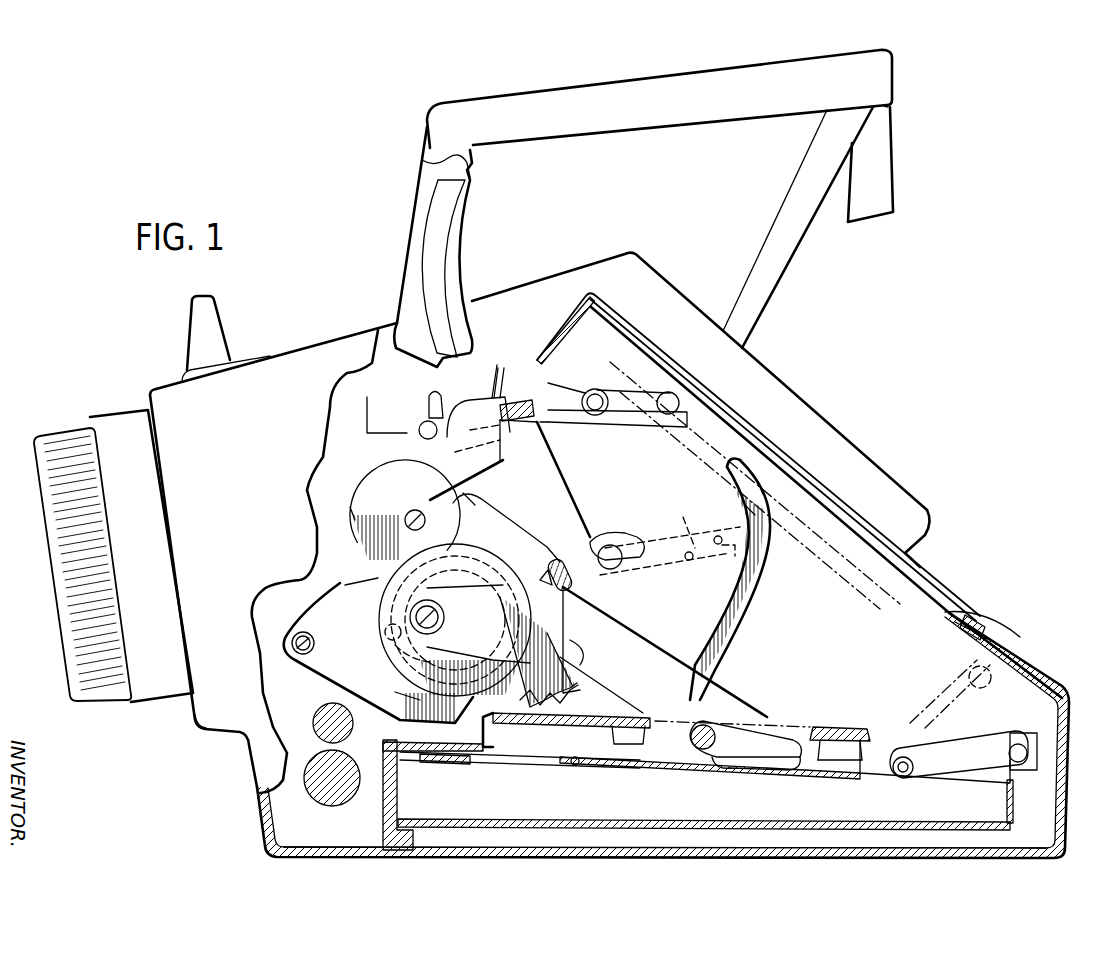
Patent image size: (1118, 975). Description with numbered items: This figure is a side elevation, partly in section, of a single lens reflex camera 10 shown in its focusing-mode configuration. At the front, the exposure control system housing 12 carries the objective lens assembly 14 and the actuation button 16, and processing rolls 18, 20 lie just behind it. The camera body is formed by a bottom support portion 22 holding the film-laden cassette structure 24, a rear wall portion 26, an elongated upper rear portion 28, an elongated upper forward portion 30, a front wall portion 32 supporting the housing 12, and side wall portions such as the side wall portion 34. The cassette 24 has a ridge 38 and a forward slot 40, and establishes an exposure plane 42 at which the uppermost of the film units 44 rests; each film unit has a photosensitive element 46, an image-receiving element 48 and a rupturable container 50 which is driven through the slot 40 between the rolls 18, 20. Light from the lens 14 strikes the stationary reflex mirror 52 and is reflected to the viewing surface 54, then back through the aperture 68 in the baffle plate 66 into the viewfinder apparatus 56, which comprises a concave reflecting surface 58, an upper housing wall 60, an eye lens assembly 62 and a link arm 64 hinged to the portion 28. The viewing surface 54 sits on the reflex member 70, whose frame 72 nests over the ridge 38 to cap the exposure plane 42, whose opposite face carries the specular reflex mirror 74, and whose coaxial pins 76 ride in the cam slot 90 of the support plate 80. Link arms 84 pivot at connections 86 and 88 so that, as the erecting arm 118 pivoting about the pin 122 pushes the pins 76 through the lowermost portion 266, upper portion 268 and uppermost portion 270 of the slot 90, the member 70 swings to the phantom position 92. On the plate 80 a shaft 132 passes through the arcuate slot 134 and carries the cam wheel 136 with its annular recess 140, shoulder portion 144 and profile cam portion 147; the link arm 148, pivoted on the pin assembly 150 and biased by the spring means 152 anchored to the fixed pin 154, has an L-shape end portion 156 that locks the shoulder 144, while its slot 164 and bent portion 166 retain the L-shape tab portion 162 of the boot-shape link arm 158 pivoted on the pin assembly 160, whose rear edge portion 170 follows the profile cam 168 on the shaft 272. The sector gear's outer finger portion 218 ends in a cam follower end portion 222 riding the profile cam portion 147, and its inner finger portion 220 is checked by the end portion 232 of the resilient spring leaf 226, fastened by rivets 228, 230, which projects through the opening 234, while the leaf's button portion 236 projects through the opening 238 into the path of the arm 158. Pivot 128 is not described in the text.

The photographic camera 10 is at (868, 432).
The exposure control system housing 12 is at (125, 414).
The objective lens assembly 14 is at (62, 436).
The actuation button 16 is at (190, 340).
The film unit processing roll 18 is at (316, 714).
The film unit processing roll 20 is at (312, 764).
The bottom support portion 22 is at (672, 858).
The film-laden cassette structure 24 is at (555, 827).
The rear wall portion 26 is at (1070, 782).
The elongated upper rear portion 28 is at (920, 567).
The elongated upper forward portion 30 is at (352, 330).
The front wall portion 32 is at (192, 714).
The side wall portion 34 is at (216, 467).
The ridge 38 is at (483, 735).
The slot 40 is at (386, 748).
The exposure plane 42 is at (577, 766).
The film unit 44 is at (810, 790).
The photosensitive element 46 is at (645, 770).
The image-receiving element 48 is at (553, 766).
The rupturable container 50 is at (448, 764).
The stationary reflex mirror 52 is at (990, 633).
The viewing surface 54 is at (862, 725).
The viewfinder apparatus 56 is at (932, 95).
The concave reflecting surface 58 is at (462, 250).
The upper housing wall 60 is at (588, 95).
The eye lens assembly 62 is at (888, 193).
The link arm 64 is at (800, 172).
The baffle plate 66 is at (565, 325).
The aperture 68 is at (560, 350).
The reflex member 70 is at (845, 742).
The peripheral rib portion or frame 72 is at (515, 718).
The specular reflex mirror 74 is at (614, 745).
The coaxial pins 76 is at (720, 764).
The support plate 80 is at (612, 502).
The link arm 84 is at (1010, 784).
The pivotal connection 86 is at (1018, 744).
The pivotal connection 88 is at (906, 778).
The cam slot 90 is at (748, 586).
The phantom position 92 is at (1000, 644).
The erecting arm 118 is at (338, 600).
The pin 122 is at (296, 632).
The pivot pin 128 is at (772, 762).
The shaft 132 is at (392, 617).
The arcuate slot 134 is at (393, 692).
The cam wheel 136 is at (395, 590).
The annular recess 140 is at (400, 650).
The shoulder portion 144 is at (438, 494).
The profile cam portion 147 is at (478, 605).
The link arm 148 is at (494, 368).
The pin assembly 150 is at (600, 394).
The spring means 152 is at (640, 406).
The fixed pin 154 is at (676, 398).
The L-shape end portion 156 is at (454, 451).
The boot-shape link arm 158 is at (512, 483).
The pin assembly 160 is at (419, 432).
The L-shape tab portion 162 is at (530, 404).
The slot 164 is at (498, 398).
The bent portion 166 is at (490, 420).
The profile cam 168 is at (370, 502).
The rear edge portion 170 is at (468, 490).
The outer finger portion 218 is at (583, 653).
The inner finger portion 220 is at (578, 592).
The cam follower end portion 222 is at (500, 547).
The resilient spring leaf 226 is at (685, 516).
The rivet 228 is at (686, 551).
The rivet 230 is at (718, 546).
The end portion 232 is at (558, 560).
The opening 234 is at (546, 573).
The button portion 236 is at (616, 573).
The opening 238 is at (640, 566).
The lowermost portion 266 is at (705, 625).
The upper portion 268 is at (748, 512).
The uppermost portion 270 is at (728, 463).
The shaft 272 is at (372, 508).